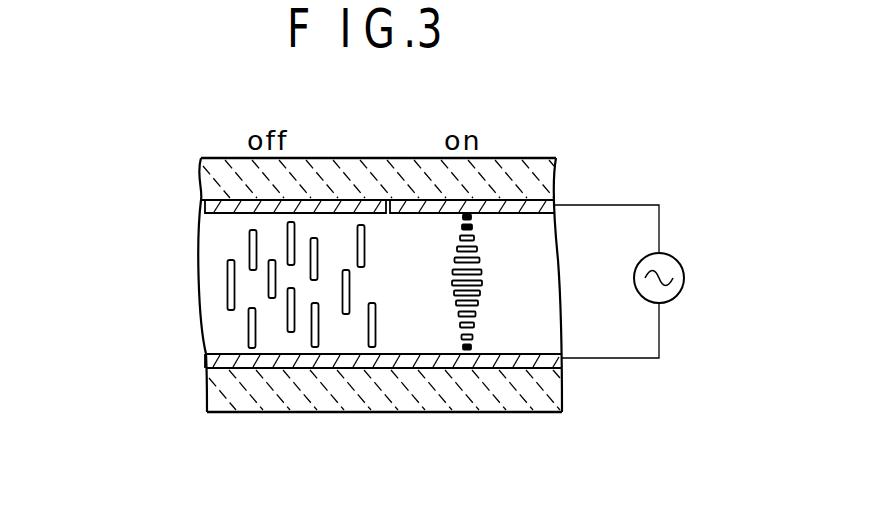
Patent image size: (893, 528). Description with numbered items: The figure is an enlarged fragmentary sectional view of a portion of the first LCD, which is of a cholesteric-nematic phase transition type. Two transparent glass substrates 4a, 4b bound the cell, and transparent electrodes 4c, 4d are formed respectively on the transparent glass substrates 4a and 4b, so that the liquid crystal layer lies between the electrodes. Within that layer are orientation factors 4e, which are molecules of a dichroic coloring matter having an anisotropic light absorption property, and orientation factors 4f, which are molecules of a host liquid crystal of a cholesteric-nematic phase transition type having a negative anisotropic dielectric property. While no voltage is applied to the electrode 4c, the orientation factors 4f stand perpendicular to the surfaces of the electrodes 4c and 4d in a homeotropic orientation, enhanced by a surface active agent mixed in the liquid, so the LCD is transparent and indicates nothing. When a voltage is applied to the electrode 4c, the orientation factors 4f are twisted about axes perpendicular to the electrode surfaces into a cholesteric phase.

The transparent glass substrate 4a is at (548, 388).
The transparent glass substrate 4b is at (556, 180).
The transparent electrode 4c is at (211, 213).
The transparent electrode 4d is at (227, 355).
The orientation factors of dichroic coloring matter 4e is at (251, 332).
The orientation factors of host liquid crystal 4f is at (450, 298).